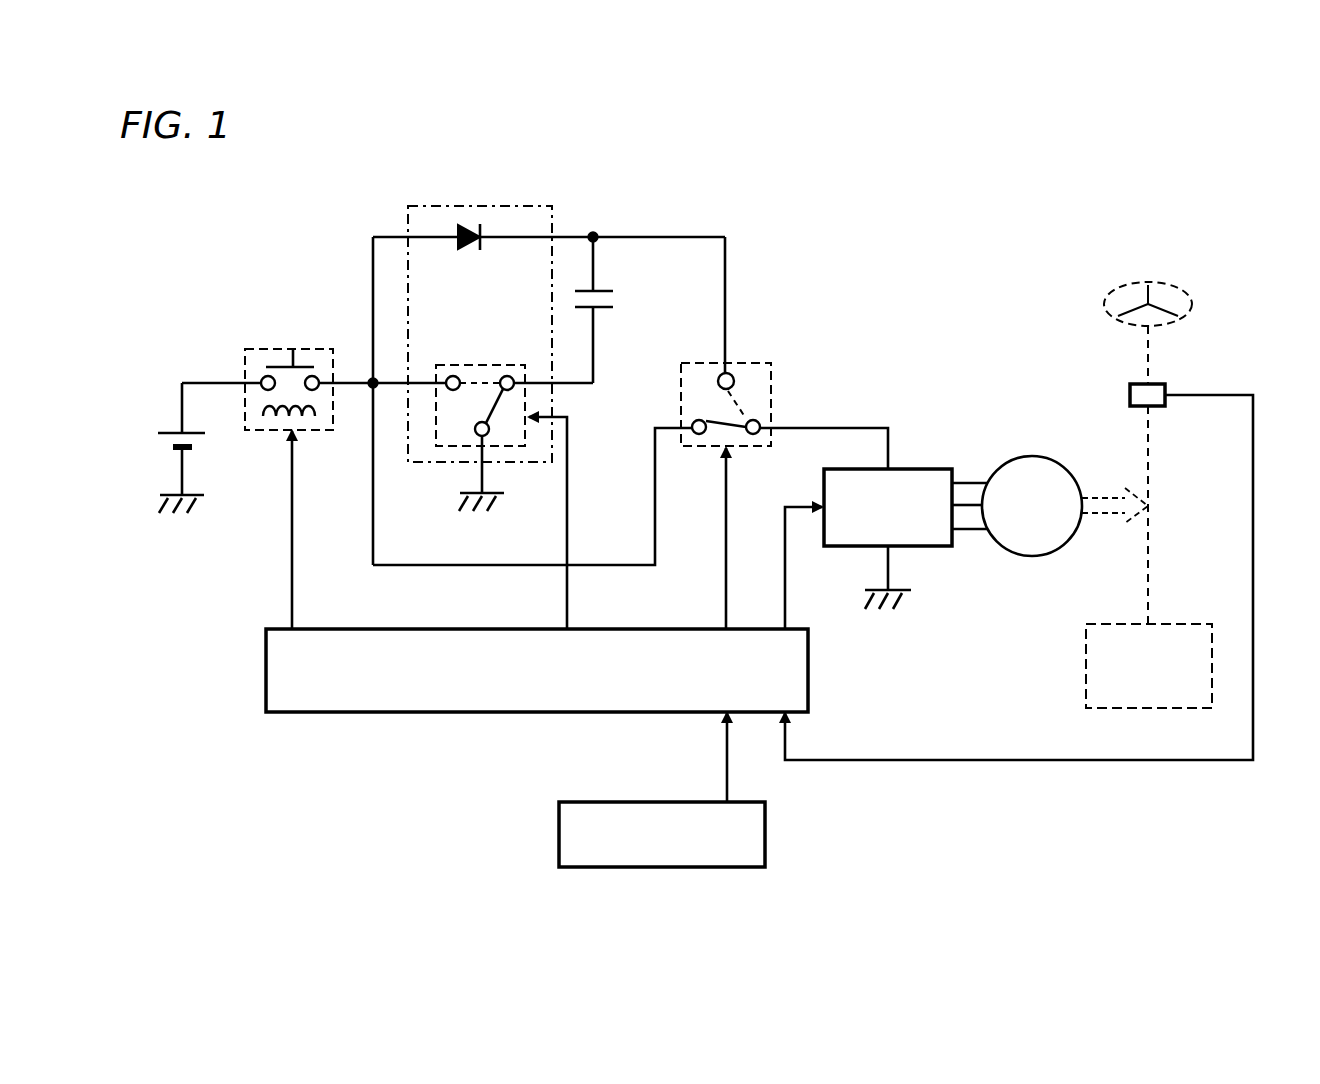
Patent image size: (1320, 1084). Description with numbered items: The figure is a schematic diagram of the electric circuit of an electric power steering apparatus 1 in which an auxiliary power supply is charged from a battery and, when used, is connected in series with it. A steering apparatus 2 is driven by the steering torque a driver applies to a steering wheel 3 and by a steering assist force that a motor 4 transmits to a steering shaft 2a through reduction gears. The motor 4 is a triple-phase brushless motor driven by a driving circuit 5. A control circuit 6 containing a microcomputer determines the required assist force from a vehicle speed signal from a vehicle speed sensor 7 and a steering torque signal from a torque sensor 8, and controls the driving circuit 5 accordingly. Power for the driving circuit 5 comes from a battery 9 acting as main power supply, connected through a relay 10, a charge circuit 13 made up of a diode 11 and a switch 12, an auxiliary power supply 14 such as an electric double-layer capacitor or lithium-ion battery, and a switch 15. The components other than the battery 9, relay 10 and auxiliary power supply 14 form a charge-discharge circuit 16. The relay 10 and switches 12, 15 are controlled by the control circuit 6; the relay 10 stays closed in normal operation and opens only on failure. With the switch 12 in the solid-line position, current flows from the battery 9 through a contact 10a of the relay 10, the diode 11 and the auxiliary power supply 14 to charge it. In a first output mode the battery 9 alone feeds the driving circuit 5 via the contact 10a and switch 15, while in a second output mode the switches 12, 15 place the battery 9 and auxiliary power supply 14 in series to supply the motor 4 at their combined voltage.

The electric power steering apparatus 1 is at (1003, 223).
The steering apparatus 2 is at (1170, 624).
The steering shaft 2a is at (1150, 510).
The steering wheel 3 is at (1186, 292).
The motor 4 is at (1062, 466).
The driving circuit 5 is at (917, 469).
The control circuit 6 is at (528, 713).
The vehicle speed sensor 7 is at (765, 835).
The torque sensor 8 is at (1160, 384).
The battery 9 is at (160, 433).
The relay 10 is at (268, 349).
The contact 10a is at (294, 350).
The diode 11 is at (470, 243).
The switch 12 is at (478, 365).
The charge circuit 13 is at (494, 206).
The auxiliary power supply 14 is at (614, 300).
The switch 15 is at (771, 378).
The charge-discharge circuit 16 is at (676, 190).